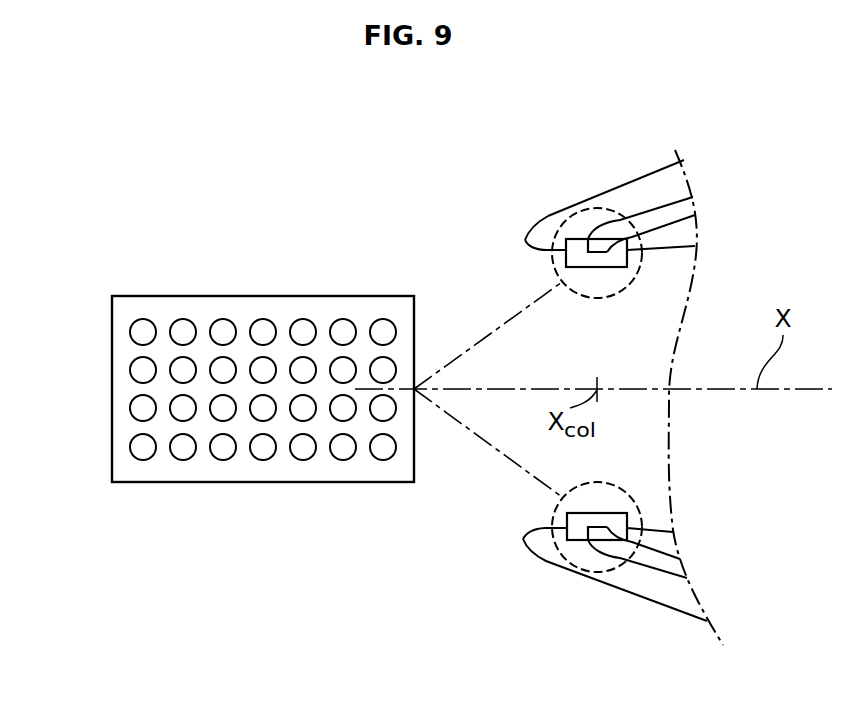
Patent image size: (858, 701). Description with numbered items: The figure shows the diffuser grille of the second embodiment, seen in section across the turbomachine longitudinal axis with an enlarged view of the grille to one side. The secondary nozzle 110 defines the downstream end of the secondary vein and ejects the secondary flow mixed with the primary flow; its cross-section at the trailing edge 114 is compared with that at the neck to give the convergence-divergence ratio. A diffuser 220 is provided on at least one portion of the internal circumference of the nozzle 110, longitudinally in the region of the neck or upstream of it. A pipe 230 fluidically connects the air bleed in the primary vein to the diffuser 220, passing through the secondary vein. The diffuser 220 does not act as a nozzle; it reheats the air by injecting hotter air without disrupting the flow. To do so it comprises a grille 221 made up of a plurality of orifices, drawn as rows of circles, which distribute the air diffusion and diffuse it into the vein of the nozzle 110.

The nozzle 110 is at (572, 370).
The trailing edge 114 is at (509, 234).
The pipe 230 is at (662, 217).
The diffuser 220 is at (598, 277).
The grille 221 is at (263, 283).